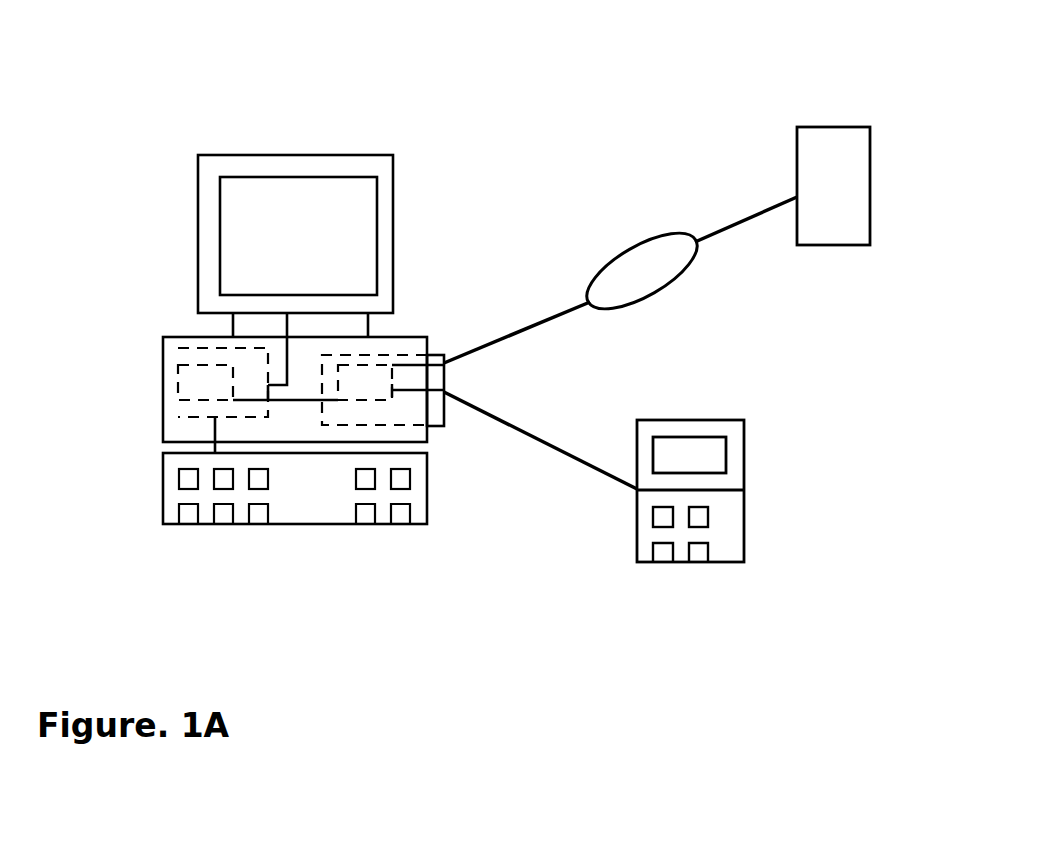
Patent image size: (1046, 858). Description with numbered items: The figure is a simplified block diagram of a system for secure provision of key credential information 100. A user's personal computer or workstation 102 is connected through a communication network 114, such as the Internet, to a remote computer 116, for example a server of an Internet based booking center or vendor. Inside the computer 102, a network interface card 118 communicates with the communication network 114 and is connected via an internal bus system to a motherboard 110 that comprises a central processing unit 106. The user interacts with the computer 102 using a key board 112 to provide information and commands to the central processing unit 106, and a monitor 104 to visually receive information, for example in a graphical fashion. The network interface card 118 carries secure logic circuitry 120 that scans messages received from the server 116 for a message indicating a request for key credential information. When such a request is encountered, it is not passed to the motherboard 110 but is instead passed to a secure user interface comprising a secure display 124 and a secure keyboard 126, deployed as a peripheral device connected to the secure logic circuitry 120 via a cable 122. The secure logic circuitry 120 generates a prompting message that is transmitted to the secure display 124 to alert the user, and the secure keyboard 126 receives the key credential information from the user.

The system for secure provision of key credential information 100 is at (462, 335).
The personal computer or workstation 102 is at (182, 333).
The monitor 104 is at (287, 218).
The central processing unit 106 is at (198, 385).
The motherboard 110 is at (200, 418).
The key board 112 is at (320, 507).
The communication network 114 is at (638, 272).
The remote computer 116 is at (833, 183).
The network interface card 118 is at (410, 402).
The secure logic circuitry 120 is at (357, 383).
The cable 122 is at (497, 418).
The secure display 124 is at (707, 457).
The secure keyboard 126 is at (725, 525).